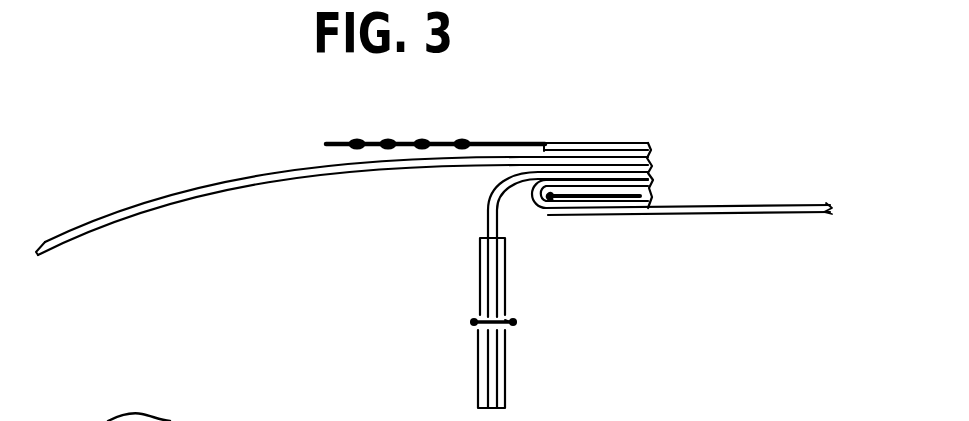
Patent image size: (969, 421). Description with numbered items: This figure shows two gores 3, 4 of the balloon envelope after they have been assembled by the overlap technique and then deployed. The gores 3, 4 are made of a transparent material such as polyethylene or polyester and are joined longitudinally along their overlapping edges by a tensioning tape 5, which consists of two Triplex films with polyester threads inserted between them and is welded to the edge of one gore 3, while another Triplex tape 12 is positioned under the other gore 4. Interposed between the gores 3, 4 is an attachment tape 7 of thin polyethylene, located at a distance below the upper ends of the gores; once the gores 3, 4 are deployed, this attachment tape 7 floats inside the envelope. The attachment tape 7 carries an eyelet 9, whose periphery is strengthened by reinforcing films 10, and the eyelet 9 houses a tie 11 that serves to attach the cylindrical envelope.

The gore 3 is at (100, 222).
The gore 4 is at (729, 212).
The tensioning tape 5 is at (463, 142).
The attachment tape 7 is at (488, 201).
The eyelet 9 is at (475, 318).
The reinforcing film 10 is at (500, 272).
The tie 11 is at (512, 326).
The Triplex tape 12 is at (656, 193).